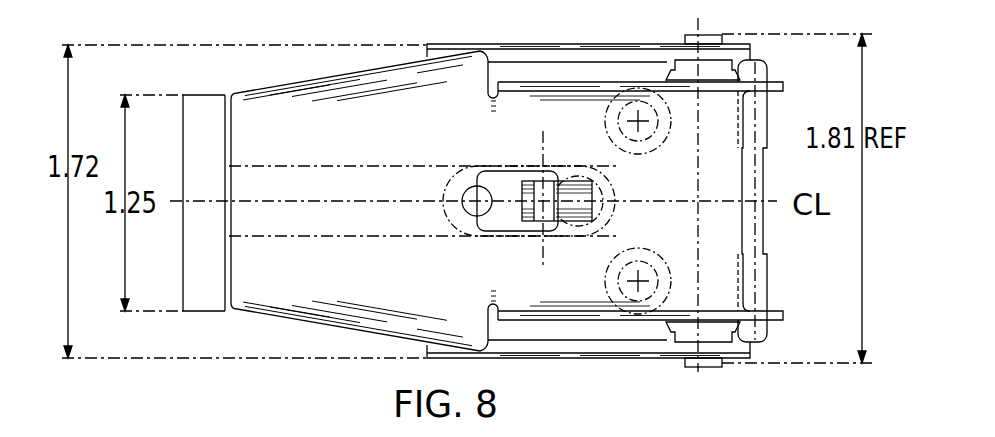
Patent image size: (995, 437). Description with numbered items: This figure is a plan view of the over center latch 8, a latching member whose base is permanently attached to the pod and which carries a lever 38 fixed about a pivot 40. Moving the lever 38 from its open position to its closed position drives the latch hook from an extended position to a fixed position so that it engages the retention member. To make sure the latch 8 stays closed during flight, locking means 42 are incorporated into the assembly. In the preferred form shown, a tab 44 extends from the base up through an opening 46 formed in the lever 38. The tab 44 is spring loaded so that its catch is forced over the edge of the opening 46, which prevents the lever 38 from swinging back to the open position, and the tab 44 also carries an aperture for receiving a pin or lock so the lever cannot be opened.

The over center latch 8 is at (632, 359).
The lever 38 is at (405, 107).
The pivot 40 is at (707, 366).
The locking means 42 is at (530, 163).
The tab 44 is at (577, 190).
The opening 46 is at (500, 227).